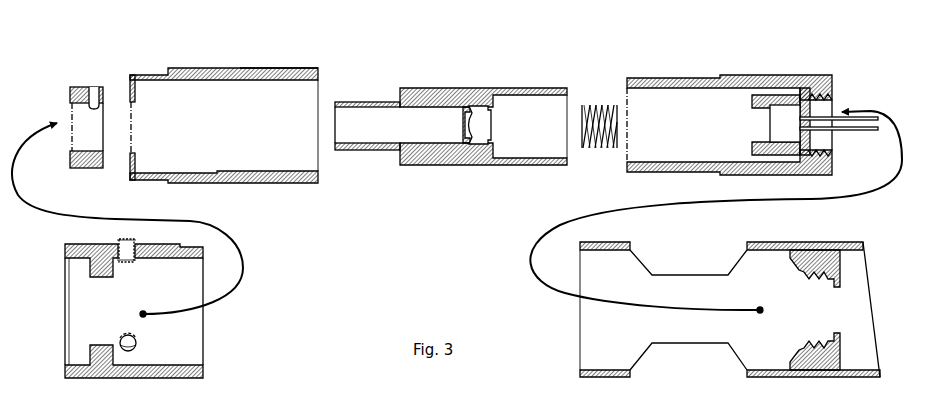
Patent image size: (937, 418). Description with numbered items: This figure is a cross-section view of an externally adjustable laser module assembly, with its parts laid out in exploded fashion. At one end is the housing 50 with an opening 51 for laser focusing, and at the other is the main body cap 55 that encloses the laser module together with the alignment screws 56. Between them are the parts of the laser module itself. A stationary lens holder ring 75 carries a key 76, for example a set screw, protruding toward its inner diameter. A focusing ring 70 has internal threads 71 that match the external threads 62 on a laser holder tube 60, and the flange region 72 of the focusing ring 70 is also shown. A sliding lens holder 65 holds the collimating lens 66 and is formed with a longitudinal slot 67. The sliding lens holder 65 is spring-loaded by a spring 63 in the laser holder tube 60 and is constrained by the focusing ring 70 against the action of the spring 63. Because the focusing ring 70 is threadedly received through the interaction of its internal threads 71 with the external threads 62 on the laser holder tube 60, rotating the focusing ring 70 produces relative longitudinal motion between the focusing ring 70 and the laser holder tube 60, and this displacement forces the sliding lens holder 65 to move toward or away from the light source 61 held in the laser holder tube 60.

The housing 50 is at (813, 256).
The opening 51 is at (676, 272).
The main body cap 55 is at (156, 250).
The alignment screws 56 is at (128, 249).
The laser holder tube 60 is at (694, 83).
The light source 61 is at (786, 121).
The external threads 62 is at (741, 78).
The spring 63 is at (600, 100).
The sliding lens holder 65 is at (437, 98).
The collimating lens 66 is at (478, 122).
The longitudinal slot 67 is at (354, 102).
The focusing ring 70 is at (217, 73).
The internal threads 71 is at (264, 78).
The flange 72 is at (138, 92).
The stationary lens holder ring 75 is at (78, 97).
The key 76 is at (98, 92).